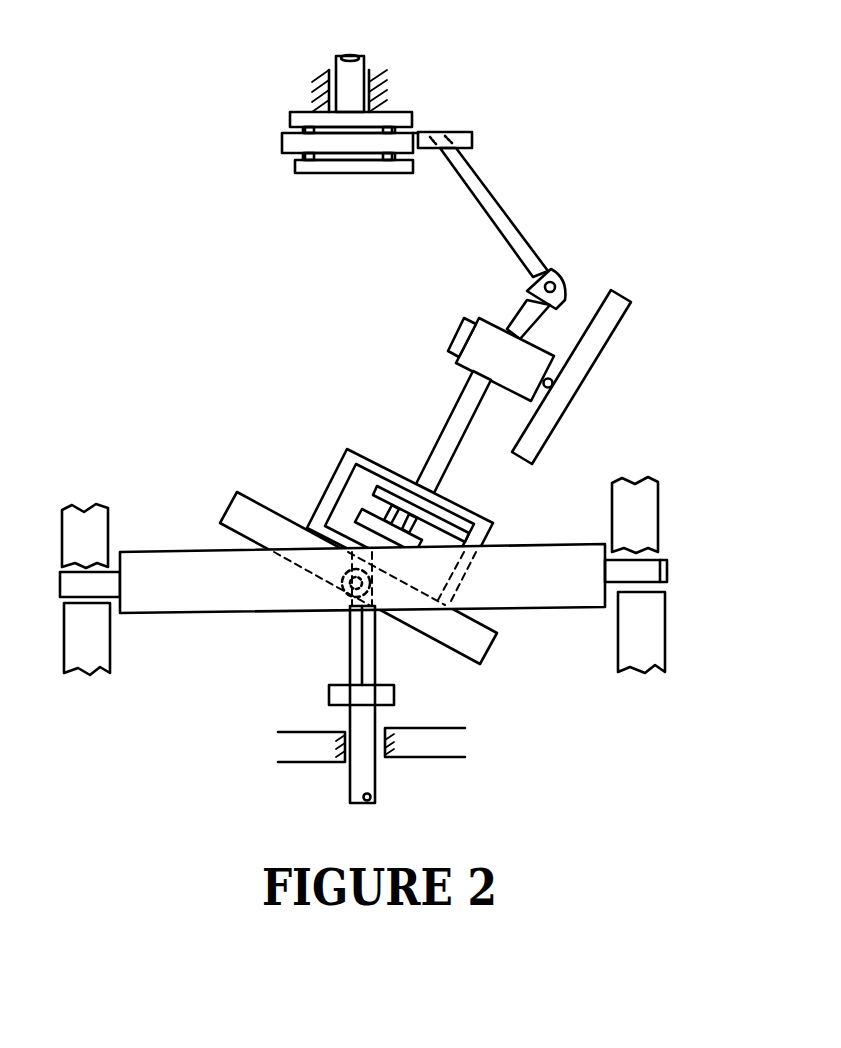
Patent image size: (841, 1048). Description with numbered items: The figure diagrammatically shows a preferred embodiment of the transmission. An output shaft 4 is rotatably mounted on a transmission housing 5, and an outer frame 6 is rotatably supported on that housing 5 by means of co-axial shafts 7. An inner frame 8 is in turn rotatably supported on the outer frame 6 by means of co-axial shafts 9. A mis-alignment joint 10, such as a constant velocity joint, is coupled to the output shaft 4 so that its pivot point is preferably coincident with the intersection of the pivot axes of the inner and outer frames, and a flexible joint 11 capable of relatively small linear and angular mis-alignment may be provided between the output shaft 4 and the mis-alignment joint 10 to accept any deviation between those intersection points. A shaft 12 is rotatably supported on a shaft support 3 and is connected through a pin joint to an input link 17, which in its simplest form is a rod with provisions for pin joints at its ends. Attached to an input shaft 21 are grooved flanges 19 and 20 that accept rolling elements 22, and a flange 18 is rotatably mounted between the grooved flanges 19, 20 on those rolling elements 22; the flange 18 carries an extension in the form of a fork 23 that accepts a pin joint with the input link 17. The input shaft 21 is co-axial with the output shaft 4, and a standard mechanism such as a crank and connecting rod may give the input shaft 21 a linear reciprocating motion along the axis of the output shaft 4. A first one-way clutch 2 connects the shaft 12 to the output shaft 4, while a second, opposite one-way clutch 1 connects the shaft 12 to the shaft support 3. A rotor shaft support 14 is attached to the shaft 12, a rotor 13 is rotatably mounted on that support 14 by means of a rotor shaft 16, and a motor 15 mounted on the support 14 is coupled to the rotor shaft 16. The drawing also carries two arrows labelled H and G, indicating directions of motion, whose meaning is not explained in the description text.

The second one-way clutch 1 is at (336, 492).
The first one-way clutch 2 is at (367, 520).
The shaft support 3 is at (348, 452).
The output shaft 4 is at (350, 790).
The transmission housing 5 is at (622, 655).
The outer frame 6 is at (213, 612).
The co-axial shafts 7 is at (670, 572).
The inner frame 8 is at (221, 505).
The co-axial shafts 9 is at (330, 610).
The mis-alignment joint 10 is at (376, 658).
The flexible joint 11 is at (329, 700).
The shaft 12 is at (448, 423).
The rotor 13 is at (633, 298).
The rotor shaft support 14 is at (495, 322).
The motor 15 is at (443, 345).
The rotor shaft 16 is at (553, 388).
The input link 17 is at (500, 213).
The flange 18 is at (433, 150).
The grooved flange 19 is at (413, 112).
The grooved flange 20 is at (296, 168).
The input shaft 21 is at (362, 57).
The rolling elements 22 is at (290, 124).
The fork 23 is at (470, 130).
The direction arrow H is at (437, 328).
The direction arrow G is at (502, 420).